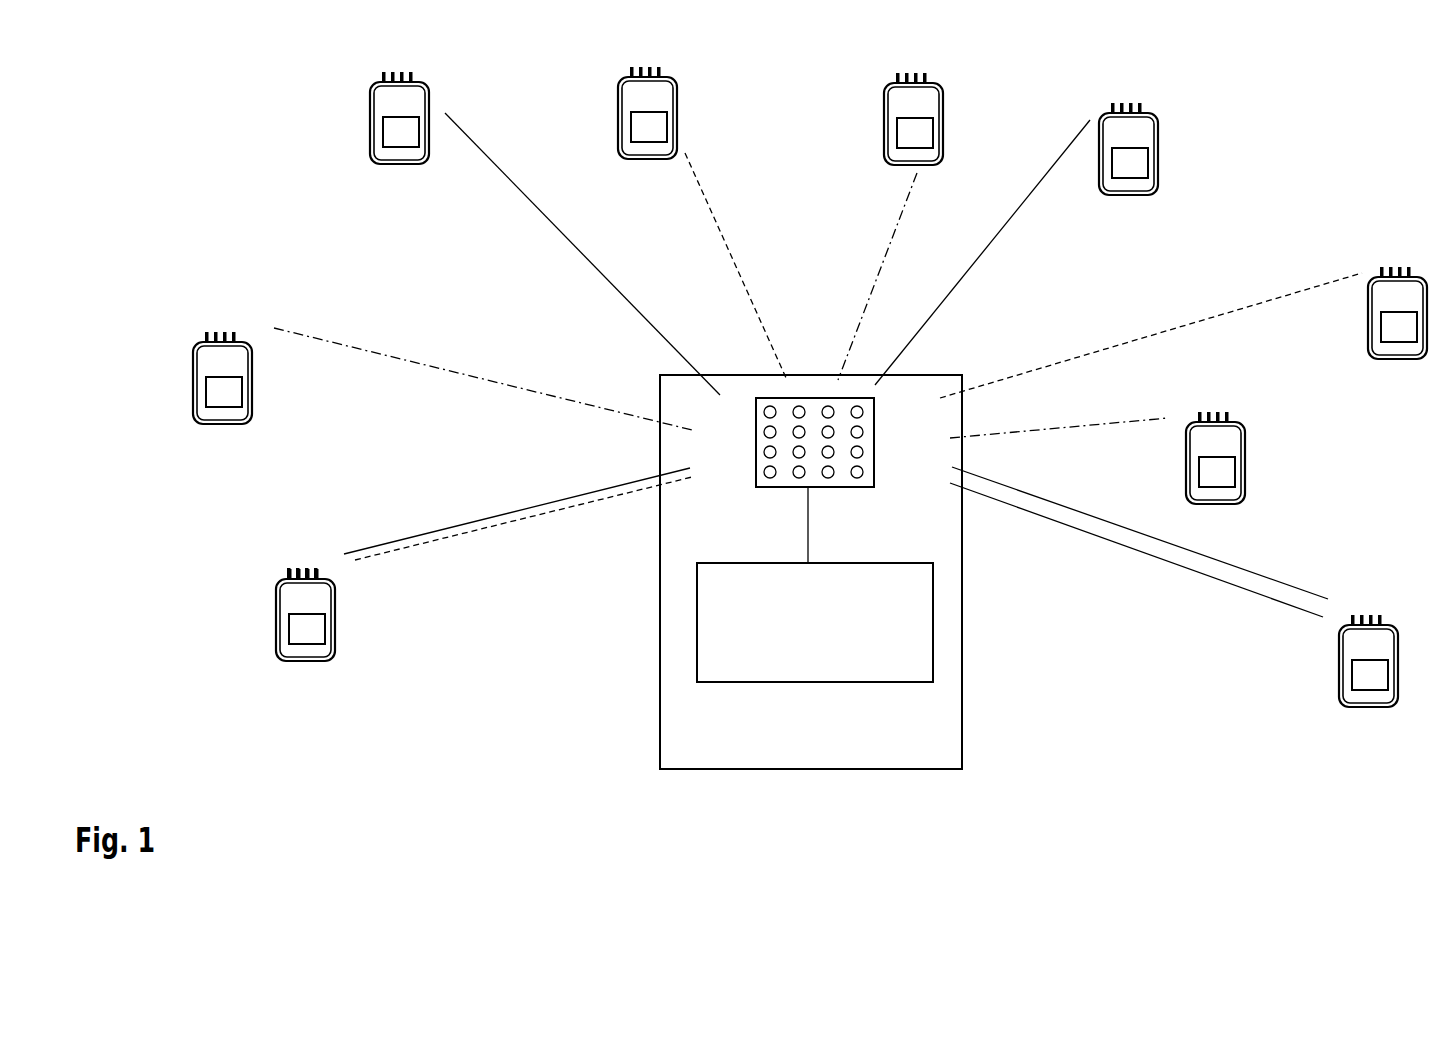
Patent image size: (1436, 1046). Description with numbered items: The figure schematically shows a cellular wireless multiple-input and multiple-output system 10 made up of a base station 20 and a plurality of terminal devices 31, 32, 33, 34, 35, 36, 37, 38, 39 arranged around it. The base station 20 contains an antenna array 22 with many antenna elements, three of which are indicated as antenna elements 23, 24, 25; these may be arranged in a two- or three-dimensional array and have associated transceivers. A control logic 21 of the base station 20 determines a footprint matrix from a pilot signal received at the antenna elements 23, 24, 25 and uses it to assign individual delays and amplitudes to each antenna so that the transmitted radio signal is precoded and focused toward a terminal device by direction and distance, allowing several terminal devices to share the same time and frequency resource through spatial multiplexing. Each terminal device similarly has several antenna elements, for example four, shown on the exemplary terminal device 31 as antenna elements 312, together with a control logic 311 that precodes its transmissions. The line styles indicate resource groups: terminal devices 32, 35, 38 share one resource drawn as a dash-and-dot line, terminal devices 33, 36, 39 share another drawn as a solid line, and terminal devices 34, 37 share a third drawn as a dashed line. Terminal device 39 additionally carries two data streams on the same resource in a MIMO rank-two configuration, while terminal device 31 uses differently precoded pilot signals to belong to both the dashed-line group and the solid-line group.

The MIMO system 10 is at (185, 110).
The base station 20 is at (655, 663).
The control logic 21 is at (933, 682).
The antenna array 22 is at (754, 489).
The antenna element 23 is at (863, 474).
The antenna element 24 is at (863, 453).
The antenna element 25 is at (863, 430).
The terminal device 31 is at (278, 667).
The control logic 311 is at (325, 632).
The antenna elements 312 is at (286, 573).
The terminal device 32 is at (197, 426).
The terminal device 33 is at (372, 167).
The terminal device 34 is at (620, 162).
The terminal device 35 is at (887, 168).
The terminal device 36 is at (1100, 198).
The terminal device 37 is at (1370, 360).
The terminal device 38 is at (1188, 505).
The terminal device 39 is at (1341, 709).